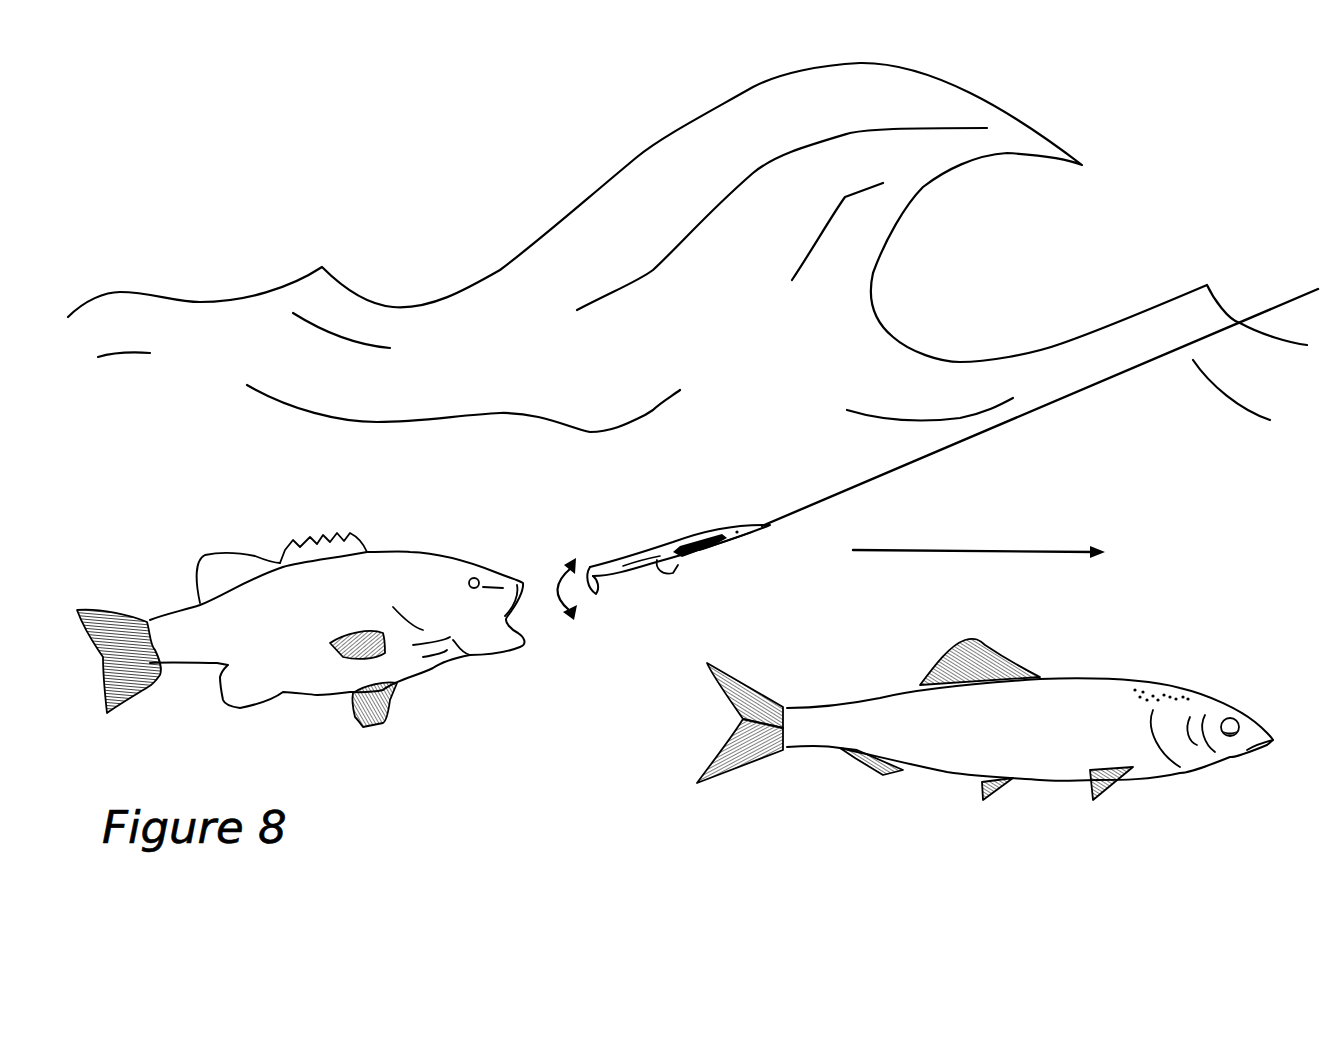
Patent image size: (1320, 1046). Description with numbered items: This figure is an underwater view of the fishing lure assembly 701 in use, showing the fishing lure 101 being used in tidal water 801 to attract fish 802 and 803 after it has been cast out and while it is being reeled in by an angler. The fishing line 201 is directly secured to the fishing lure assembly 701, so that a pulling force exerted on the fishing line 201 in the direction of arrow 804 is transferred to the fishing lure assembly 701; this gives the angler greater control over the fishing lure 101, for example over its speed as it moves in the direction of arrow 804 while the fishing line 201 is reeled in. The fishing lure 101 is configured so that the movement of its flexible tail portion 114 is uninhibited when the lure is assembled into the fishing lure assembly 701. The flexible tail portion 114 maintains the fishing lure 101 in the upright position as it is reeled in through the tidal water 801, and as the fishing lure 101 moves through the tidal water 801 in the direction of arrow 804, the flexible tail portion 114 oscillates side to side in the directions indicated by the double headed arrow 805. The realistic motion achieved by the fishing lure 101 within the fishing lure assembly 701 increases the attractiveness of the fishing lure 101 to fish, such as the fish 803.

The tidal water 801 is at (455, 327).
The fishing line 201 is at (1142, 364).
The arrow 804 is at (1010, 550).
The double headed arrow 805 is at (552, 584).
The fishing lure 101 is at (626, 542).
The flexible tail portion 114 is at (597, 570).
The fishing lure assembly 701 is at (746, 560).
The fish 803 is at (325, 610).
The fish 802 is at (1007, 720).